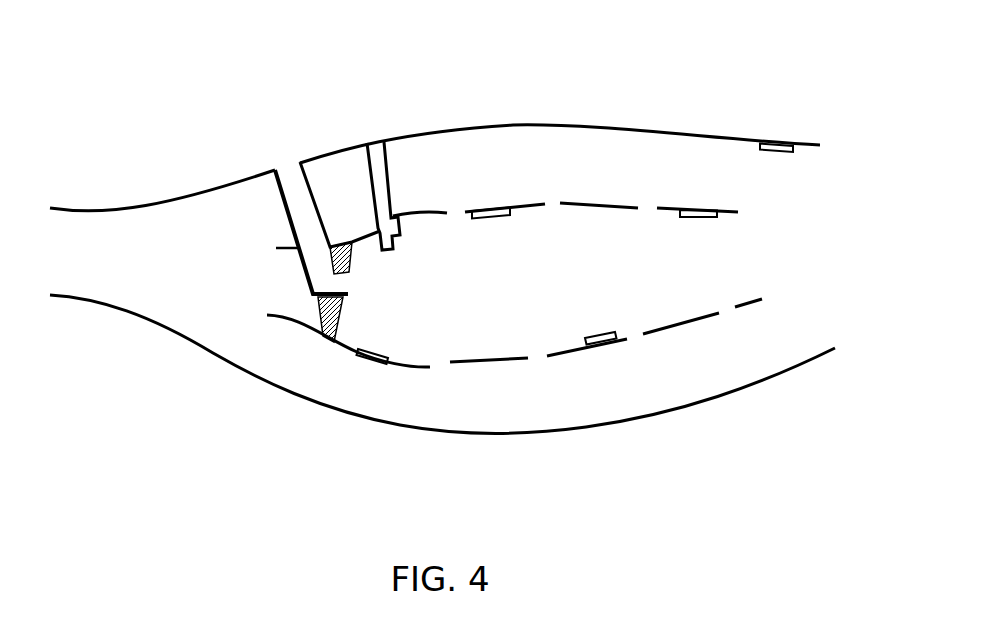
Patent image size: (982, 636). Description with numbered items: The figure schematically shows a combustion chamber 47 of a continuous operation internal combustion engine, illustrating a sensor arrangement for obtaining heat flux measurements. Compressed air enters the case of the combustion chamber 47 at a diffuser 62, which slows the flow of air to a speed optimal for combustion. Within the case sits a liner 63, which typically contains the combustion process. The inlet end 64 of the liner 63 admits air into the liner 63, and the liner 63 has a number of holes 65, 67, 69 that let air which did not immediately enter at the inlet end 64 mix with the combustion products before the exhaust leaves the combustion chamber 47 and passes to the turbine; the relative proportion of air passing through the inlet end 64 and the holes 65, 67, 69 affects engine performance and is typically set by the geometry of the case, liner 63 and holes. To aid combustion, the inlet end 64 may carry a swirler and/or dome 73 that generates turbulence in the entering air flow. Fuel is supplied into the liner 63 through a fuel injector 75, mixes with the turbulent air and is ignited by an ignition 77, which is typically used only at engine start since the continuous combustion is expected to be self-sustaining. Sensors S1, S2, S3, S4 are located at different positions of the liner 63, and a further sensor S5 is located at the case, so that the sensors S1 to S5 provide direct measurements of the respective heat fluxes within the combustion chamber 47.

The combustion chamber 47 is at (241, 59).
The diffuser 62 is at (163, 248).
The liner 63 is at (413, 213).
The inlet end 64 is at (323, 330).
The hole 65 is at (429, 368).
The hole 67 is at (727, 138).
The hole 69 is at (647, 335).
The swirler and/or dome 73 is at (353, 236).
The fuel injector 75 is at (290, 168).
The ignition 77 is at (393, 181).
The sensor S1 is at (397, 310).
The sensor S2 is at (470, 250).
The sensor S3 is at (577, 291).
The sensor S4 is at (699, 224).
The sensor S5 is at (798, 203).